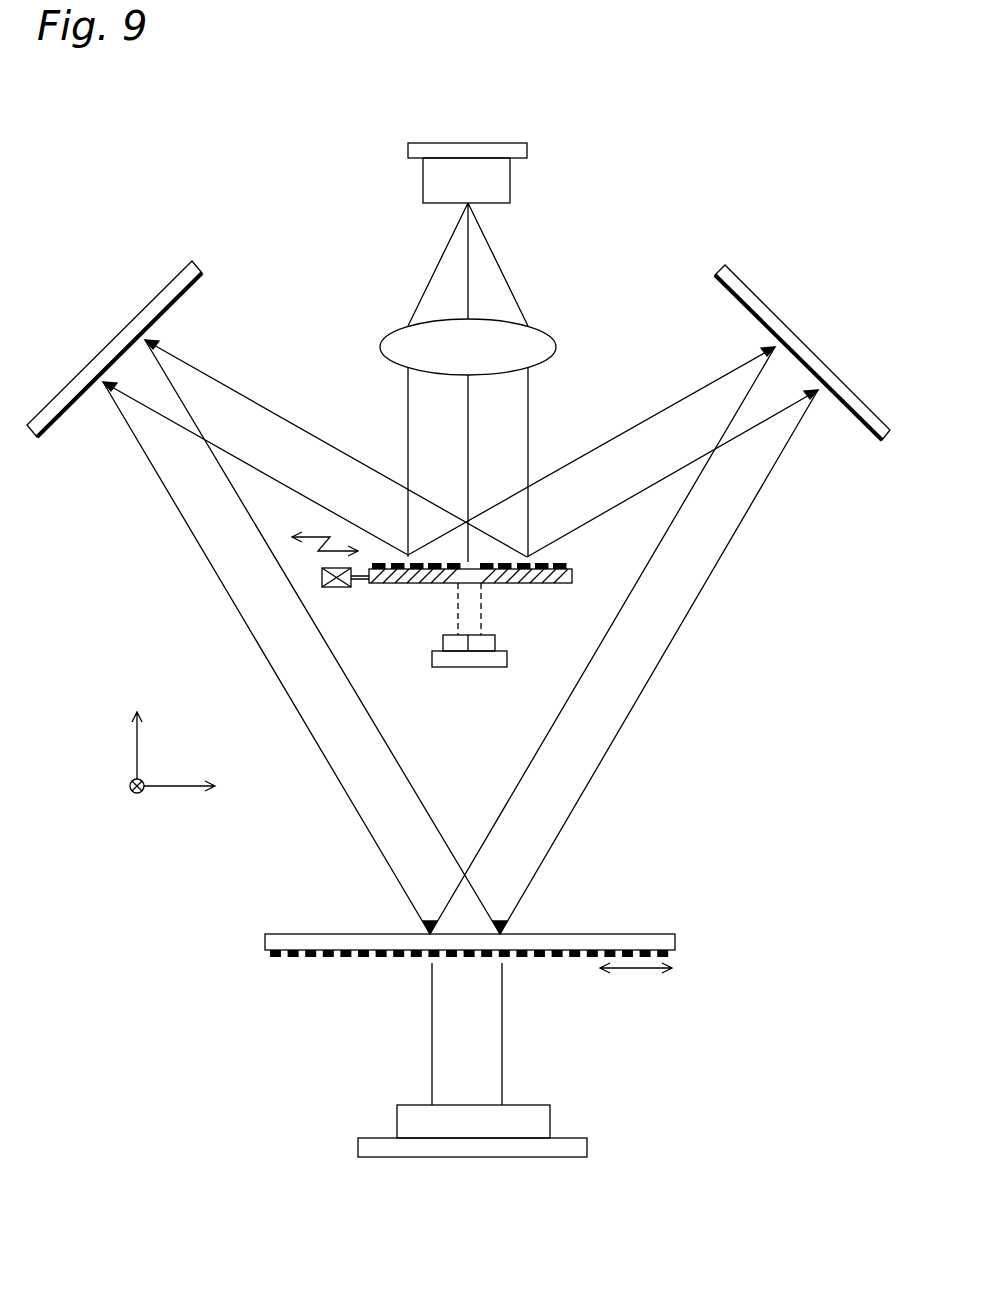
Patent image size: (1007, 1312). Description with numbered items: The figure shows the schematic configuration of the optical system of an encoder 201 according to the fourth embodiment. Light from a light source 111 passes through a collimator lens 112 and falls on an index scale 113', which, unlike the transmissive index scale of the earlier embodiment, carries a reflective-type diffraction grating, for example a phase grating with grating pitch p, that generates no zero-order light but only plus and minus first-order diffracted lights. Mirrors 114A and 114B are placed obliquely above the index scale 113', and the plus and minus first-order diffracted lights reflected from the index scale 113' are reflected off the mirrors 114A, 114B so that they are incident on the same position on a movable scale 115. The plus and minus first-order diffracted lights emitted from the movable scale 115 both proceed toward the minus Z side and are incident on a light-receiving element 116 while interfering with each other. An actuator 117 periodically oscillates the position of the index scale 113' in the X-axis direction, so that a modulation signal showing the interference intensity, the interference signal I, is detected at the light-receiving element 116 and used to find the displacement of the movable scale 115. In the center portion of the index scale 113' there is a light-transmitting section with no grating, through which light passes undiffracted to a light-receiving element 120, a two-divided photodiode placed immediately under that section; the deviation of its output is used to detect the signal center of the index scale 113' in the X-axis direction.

The encoder 201 is at (362, 202).
The light source 111 is at (515, 143).
The collimator lens 112 is at (538, 329).
The index scale 113' is at (472, 610).
The mirror 114A is at (143, 310).
The mirror 114B is at (778, 318).
The movable scale 115 is at (623, 934).
The light-receiving element 116 is at (537, 1105).
The actuator 117 is at (350, 588).
The light-receiving element 120 is at (470, 668).